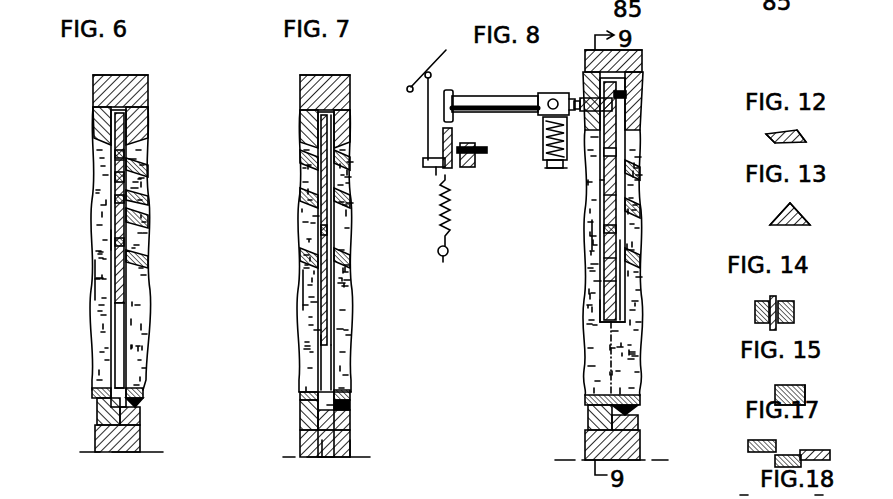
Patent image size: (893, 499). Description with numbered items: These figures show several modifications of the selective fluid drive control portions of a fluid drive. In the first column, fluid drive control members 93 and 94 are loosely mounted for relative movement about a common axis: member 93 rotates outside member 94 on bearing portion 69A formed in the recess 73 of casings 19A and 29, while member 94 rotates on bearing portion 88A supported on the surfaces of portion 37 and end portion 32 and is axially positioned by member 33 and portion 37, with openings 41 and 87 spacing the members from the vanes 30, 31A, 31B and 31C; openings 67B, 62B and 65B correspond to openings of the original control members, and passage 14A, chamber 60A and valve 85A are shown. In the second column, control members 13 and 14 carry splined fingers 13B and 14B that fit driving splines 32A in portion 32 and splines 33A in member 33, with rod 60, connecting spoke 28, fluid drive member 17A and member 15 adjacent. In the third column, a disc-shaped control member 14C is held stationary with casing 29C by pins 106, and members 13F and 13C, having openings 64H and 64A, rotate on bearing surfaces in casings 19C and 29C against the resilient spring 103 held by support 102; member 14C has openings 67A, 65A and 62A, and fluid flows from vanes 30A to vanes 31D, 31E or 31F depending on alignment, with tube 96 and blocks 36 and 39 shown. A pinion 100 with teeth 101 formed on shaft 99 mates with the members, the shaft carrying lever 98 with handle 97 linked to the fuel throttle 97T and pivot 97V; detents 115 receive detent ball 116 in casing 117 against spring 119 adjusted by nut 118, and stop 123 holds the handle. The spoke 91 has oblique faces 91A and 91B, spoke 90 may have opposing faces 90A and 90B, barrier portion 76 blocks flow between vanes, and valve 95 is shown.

In FIG. 7, the fluid drive control member 13 is at (321, 335).
In FIG. 7, the splined fingers 13B is at (305, 415).
In FIG. 8, the fluid drive control member 13C is at (605, 285).
In FIG. 15, the fluid drive control member 13C is at (805, 390).
In FIG. 17, the fluid drive control member 13C is at (812, 450).
In FIG. 18, the fluid drive control member 13C is at (846, 488).
In FIG. 8, the fluid drive control member 13F is at (605, 262).
In FIG. 15, the fluid drive control member 13F is at (778, 388).
In FIG. 17, the fluid drive control member 13F is at (760, 443).
In FIG. 18, the fluid drive control member 13F is at (719, 487).
In FIG. 7, the fluid drive control member 14 is at (328, 305).
In FIG. 6, the inner tube 14A is at (123, 292).
In FIG. 7, the splined fingers 14B is at (325, 450).
In FIG. 8, the disc shaped control member 14C is at (620, 292).
In FIG. 15, the disc shaped control member 14C is at (805, 403).
In FIG. 6, the member 15 is at (97, 390).
In FIG. 7, the member 15 is at (303, 395).
In FIG. 8, the member 15 is at (586, 392).
In FIG. 6, the fluid drive member 17A is at (141, 390).
In FIG. 7, the fluid drive member 17A is at (340, 392).
In FIG. 8, the fluid drive member 17A is at (640, 398).
In FIG. 6, the casing 19A is at (93, 80).
In FIG. 7, the casing 19A is at (300, 80).
In FIG. 8, the casing 19C is at (586, 58).
In FIG. 7, the connecting spoke 28 is at (321, 364).
In FIG. 8, the connecting spoke 28 is at (592, 308).
In FIG. 7, the casing 29 is at (338, 128).
In FIG. 8, the casing 29C is at (612, 75).
In FIG. 6, the vane 30 is at (97, 278).
In FIG. 7, the vane 30 is at (305, 286).
In FIG. 14, the vane 30 is at (760, 305).
In FIG. 8, the vanes 30A is at (600, 233).
In FIG. 6, the vane 31A is at (141, 168).
In FIG. 7, the vane 31A is at (340, 158).
In FIG. 14, the vane 31A is at (782, 304).
In FIG. 6, the vane 31B is at (141, 215).
In FIG. 7, the vane 31B is at (340, 195).
In FIG. 6, the vane 31C is at (141, 258).
In FIG. 7, the vane 31C is at (340, 260).
In FIG. 8, the fluid vane 31D is at (635, 170).
In FIG. 8, the fluid vane 31E is at (635, 205).
In FIG. 8, the fluid vane 31F is at (635, 258).
In FIG. 6, the end portion 32 is at (130, 435).
In FIG. 7, the end portion 32 is at (345, 448).
In FIG. 7, the driving splines 32A is at (330, 418).
In FIG. 6, the member 33 is at (140, 410).
In FIG. 7, the member 33 is at (335, 410).
In FIG. 8, the member 33 is at (632, 417).
In FIG. 7, the splines 33A is at (345, 400).
In FIG. 6, the head block 36 is at (148, 85).
In FIG. 7, the head block 36 is at (350, 83).
In FIG. 8, the head block 36 is at (642, 60).
In FIG. 6, the portion 37 is at (100, 415).
In FIG. 7, the portion 37 is at (300, 437).
In FIG. 8, the portion 37 is at (592, 417).
In FIG. 8, the base plug 39 is at (635, 443).
In FIG. 6, the opening 41 is at (119, 232).
In FIG. 7, the rod 60 is at (338, 348).
In FIG. 6, the rod 60A is at (123, 342).
In FIG. 8, the opening 62A is at (620, 228).
In FIG. 6, the opening 62B is at (123, 240).
In FIG. 8, the opening 64A is at (622, 140).
In FIG. 8, the opening 64H is at (578, 188).
In FIG. 8, the opening 65A is at (605, 197).
In FIG. 6, the opening 65B is at (118, 182).
In FIG. 8, the opening 67A is at (612, 152).
In FIG. 6, the opening 67B is at (119, 148).
In FIG. 6, the bearing portion 69A is at (111, 118).
In FIG. 6, the recess 73 is at (127, 116).
In FIG. 7, the recess 73 is at (335, 118).
In FIG. 14, the barrier portion 76 is at (795, 327).
In FIG. 6, the valve 85A is at (111, 215).
In FIG. 6, the opening 87 is at (150, 317).
In FIG. 6, the bearing portion 88A is at (137, 385).
In FIG. 13, the wedge 90 is at (784, 226).
In FIG. 13, the opposing face 90A is at (780, 214).
In FIG. 13, the opposing face 90B is at (797, 211).
In FIG. 12, the spoke 91 is at (792, 134).
In FIG. 12, the oblique face 91A is at (773, 141).
In FIG. 12, the oblique face 91B is at (805, 141).
In FIG. 6, the fluid drive control member 93 is at (118, 152).
In FIG. 6, the fluid drive control member 94 is at (141, 200).
In FIG. 7, the valve 95 is at (330, 232).
In FIG. 8, the tube 96 is at (620, 343).
In FIG. 8, the handle 97 is at (436, 170).
In FIG. 8, the fuel throttle 97T is at (428, 52).
In FIG. 8, the lever pivot 97V is at (432, 118).
In FIG. 8, the lever 98 is at (448, 88).
In FIG. 8, the shaft 99 is at (482, 97).
In FIG. 8, the pinion 100 is at (640, 112).
In FIG. 8, the pinion teeth 101 is at (574, 95).
In FIG. 8, the support 102 is at (443, 262).
In FIG. 8, the spring 103 is at (448, 218).
In FIG. 8, the pin 106 is at (632, 92).
In FIG. 8, the detent 115 is at (548, 100).
In FIG. 8, the detent ball 116 is at (543, 137).
In FIG. 8, the casing 117 is at (548, 158).
In FIG. 8, the nut 118 is at (551, 164).
In FIG. 8, the spring 119 is at (476, 153).
In FIG. 8, the stop 123 is at (470, 142).